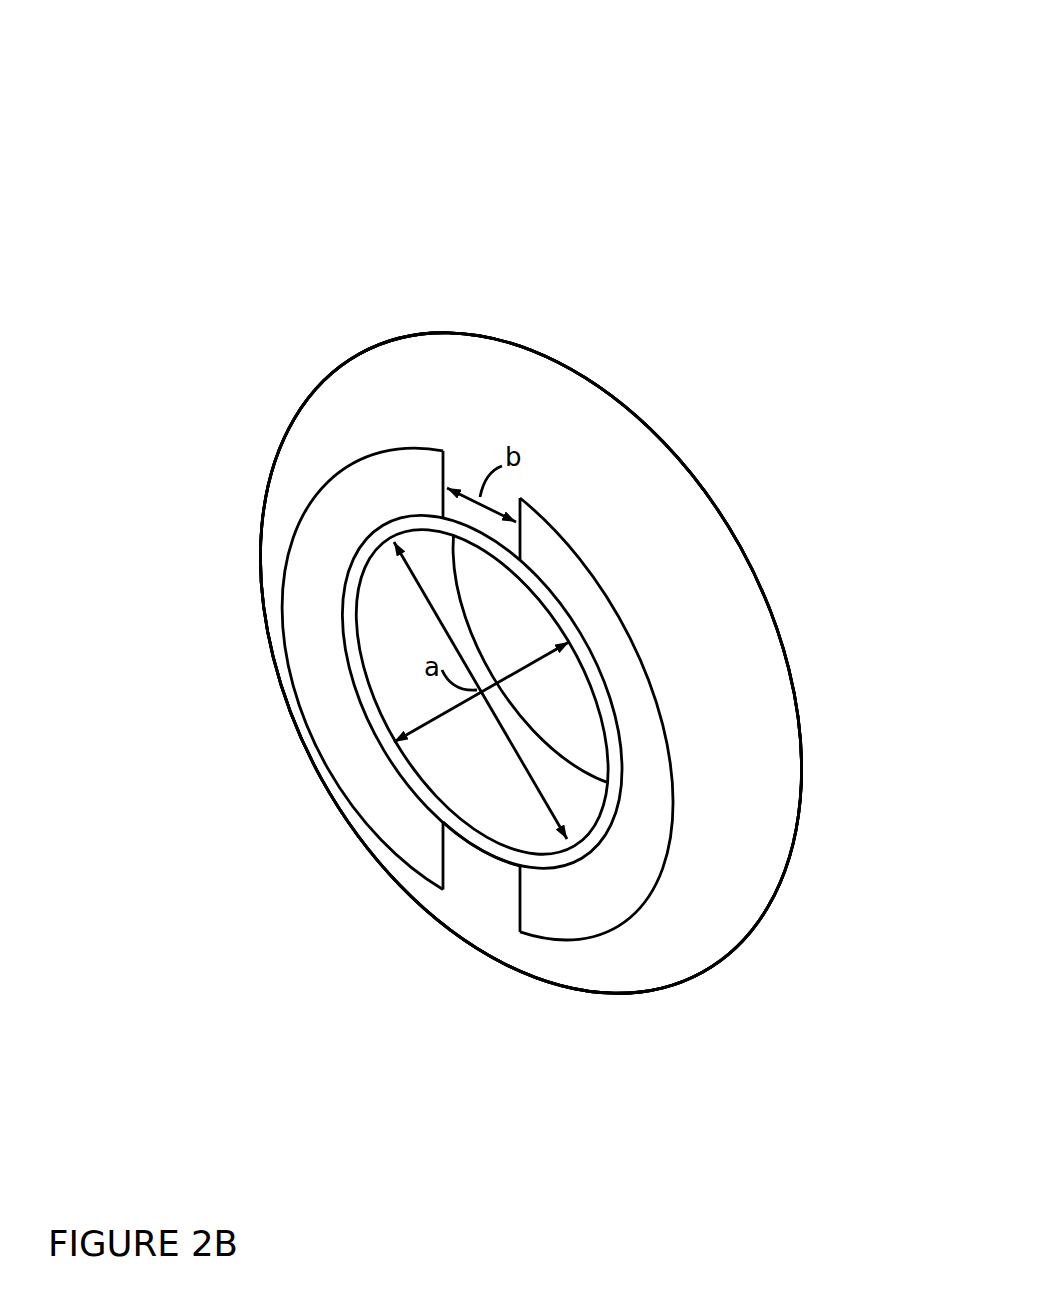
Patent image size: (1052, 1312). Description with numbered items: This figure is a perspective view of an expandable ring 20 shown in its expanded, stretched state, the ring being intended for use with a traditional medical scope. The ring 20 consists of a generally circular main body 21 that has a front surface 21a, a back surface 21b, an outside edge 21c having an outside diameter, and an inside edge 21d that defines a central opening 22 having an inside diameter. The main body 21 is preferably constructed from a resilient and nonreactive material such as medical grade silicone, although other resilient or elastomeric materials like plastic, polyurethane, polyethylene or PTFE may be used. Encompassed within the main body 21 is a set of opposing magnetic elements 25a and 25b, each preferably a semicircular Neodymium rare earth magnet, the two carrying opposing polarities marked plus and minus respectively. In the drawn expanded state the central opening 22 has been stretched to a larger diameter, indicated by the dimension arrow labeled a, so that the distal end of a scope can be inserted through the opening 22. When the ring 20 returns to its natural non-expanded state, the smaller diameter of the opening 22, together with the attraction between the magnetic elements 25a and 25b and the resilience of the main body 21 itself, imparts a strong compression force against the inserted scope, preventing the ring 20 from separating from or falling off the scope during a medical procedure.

The expandable ring 20 is at (207, 190).
The main body 21 is at (290, 485).
The front surface 21a is at (505, 907).
The back surface 21b is at (752, 583).
The outside edge 21c is at (487, 398).
The inside edge 21d is at (498, 792).
The central opening 22 is at (557, 723).
The magnetic element 25a is at (334, 664).
The magnetic element 25b is at (540, 576).